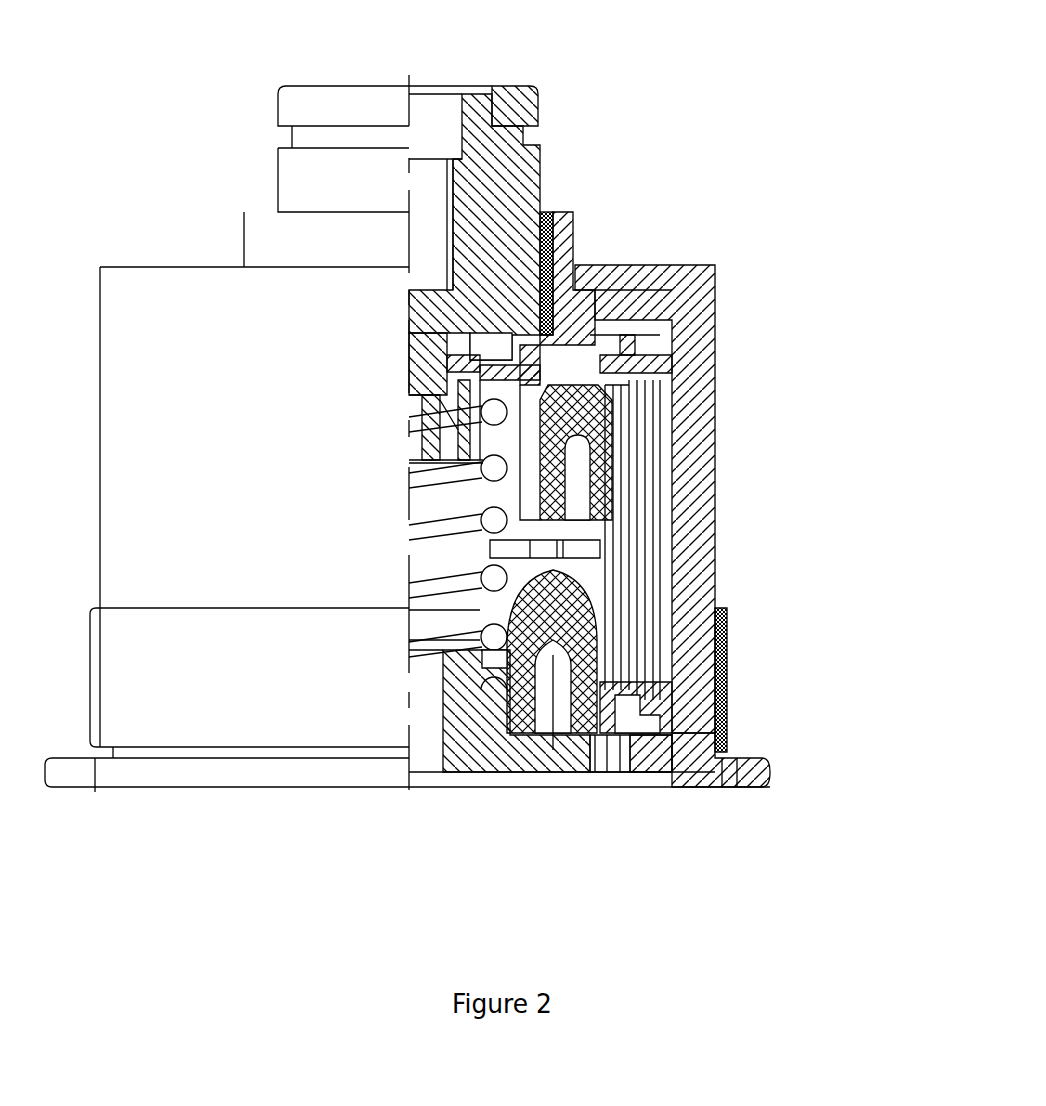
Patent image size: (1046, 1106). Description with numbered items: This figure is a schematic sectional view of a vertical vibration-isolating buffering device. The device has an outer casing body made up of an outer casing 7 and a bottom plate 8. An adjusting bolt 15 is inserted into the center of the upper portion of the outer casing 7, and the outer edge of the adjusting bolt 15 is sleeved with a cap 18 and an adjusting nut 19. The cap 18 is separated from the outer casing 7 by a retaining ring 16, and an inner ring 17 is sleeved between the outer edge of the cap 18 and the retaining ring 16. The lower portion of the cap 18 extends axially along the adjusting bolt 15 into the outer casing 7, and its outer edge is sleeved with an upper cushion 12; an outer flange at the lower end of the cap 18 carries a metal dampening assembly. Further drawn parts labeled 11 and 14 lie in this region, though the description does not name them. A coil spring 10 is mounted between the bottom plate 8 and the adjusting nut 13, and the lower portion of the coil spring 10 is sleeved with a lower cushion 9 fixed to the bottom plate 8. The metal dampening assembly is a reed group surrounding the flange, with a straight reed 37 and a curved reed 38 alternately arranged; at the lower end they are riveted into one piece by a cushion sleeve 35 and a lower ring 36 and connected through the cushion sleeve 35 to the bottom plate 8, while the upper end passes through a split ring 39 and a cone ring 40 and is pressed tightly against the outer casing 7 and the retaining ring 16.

The outer casing 7 is at (693, 767).
The bottom plate 8 is at (655, 745).
The lower cushion 9 is at (585, 682).
The coil spring 10 is at (494, 578).
The valve stem guide 11 is at (635, 532).
The upper cushion 12 is at (598, 493).
The adjusting nut 13 is at (608, 427).
The retaining bracket 14 is at (640, 365).
The adjusting bolt 15 is at (667, 330).
The retaining ring 16 is at (572, 302).
The inner ring 17 is at (548, 272).
The cap 18 is at (513, 233).
The adjusting nut 19 is at (510, 112).
The cushion sleeve 35 is at (612, 720).
The lower ring 36 is at (650, 708).
The straight reed 37 is at (637, 483).
The curved reed 38 is at (472, 425).
The split ring 39 is at (450, 362).
The cone ring 40 is at (655, 336).